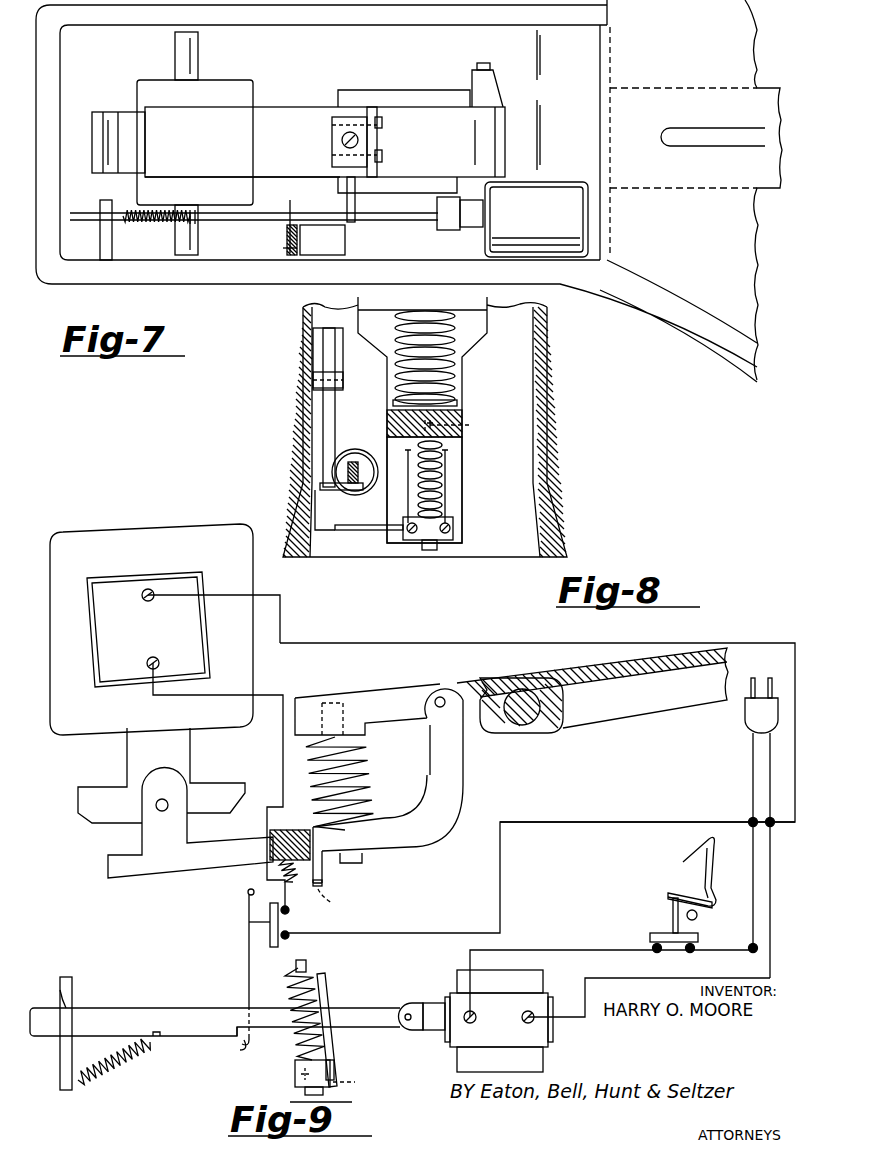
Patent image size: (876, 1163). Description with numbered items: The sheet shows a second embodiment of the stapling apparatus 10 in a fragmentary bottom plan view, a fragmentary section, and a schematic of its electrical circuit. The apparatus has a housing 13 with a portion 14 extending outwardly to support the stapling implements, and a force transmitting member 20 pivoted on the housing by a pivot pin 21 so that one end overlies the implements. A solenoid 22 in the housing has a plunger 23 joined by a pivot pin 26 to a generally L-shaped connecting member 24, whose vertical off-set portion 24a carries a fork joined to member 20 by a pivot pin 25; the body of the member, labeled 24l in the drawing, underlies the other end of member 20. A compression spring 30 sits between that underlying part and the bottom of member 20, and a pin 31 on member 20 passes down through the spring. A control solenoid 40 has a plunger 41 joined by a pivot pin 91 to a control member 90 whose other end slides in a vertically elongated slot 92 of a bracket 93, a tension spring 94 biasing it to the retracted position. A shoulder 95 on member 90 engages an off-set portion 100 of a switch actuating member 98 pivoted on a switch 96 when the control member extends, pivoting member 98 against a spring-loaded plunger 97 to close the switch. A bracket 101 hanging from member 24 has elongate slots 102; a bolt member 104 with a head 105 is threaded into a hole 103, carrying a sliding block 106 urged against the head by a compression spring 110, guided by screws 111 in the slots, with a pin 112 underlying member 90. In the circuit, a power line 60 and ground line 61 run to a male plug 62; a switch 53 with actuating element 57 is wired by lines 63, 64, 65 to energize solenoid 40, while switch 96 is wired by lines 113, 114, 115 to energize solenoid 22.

In FIG. 7, the apparatus 10 is at (190, 283).
In FIG. 7, the housing 13 is at (270, 262).
In FIG. 8, the housing 13 is at (545, 420).
In FIG. 7, the portion 14 is at (722, 249).
In FIG. 7, the force transmitting member 20 is at (757, 198).
In FIG. 9, the force transmitting member 20 is at (683, 716).
In FIG. 9, the pivot pin 21 is at (540, 733).
In FIG. 7, the solenoid 22 is at (160, 82).
In FIG. 9, the solenoid 22 is at (100, 545).
In FIG. 7, the plunger 23 is at (122, 112).
In FIG. 9, the plunger 23 is at (127, 765).
In FIG. 7, the connecting member 24 is at (288, 100).
In FIG. 8, the connecting member 24 is at (470, 420).
In FIG. 9, the connecting member 24 is at (470, 797).
In FIG. 7, the off-set portion 24a is at (470, 80).
In FIG. 9, the off-set portion 24a is at (465, 770).
In FIG. 7, the armature lever arm 24l is at (265, 105).
In FIG. 9, the armature lever arm 24l is at (182, 870).
In FIG. 7, the pivot pin 25 is at (482, 63).
In FIG. 9, the pivot pin 25 is at (442, 697).
In FIG. 9, the pivot pin 26 is at (156, 808).
In FIG. 8, the compression spring 30 is at (457, 386).
In FIG. 9, the compression spring 30 is at (366, 778).
In FIG. 8, the pin 31 is at (455, 352).
In FIG. 9, the pin 31 is at (355, 863).
In FIG. 7, the control solenoid 40 is at (550, 212).
In FIG. 8, the control solenoid 40 is at (372, 450).
In FIG. 9, the control solenoid 40 is at (511, 1027).
In FIG. 7, the plunger 41 is at (475, 228).
In FIG. 9, the plunger 41 is at (432, 1003).
In FIG. 9, the switch 53 is at (655, 933).
In FIG. 9, the actuating element 57 is at (706, 872).
In FIG. 9, the power line 60 is at (753, 782).
In FIG. 9, the ground line 61 is at (786, 766).
In FIG. 9, the male plug 62 is at (755, 725).
In FIG. 9, the line 63 is at (748, 950).
In FIG. 9, the line 64 is at (594, 950).
In FIG. 9, the line 65 is at (648, 978).
In FIG. 7, the control member 90 is at (235, 210).
In FIG. 8, the control member 90 is at (348, 465).
In FIG. 9, the control member 90 is at (178, 1006).
In FIG. 7, the pivot pin 91 is at (445, 232).
In FIG. 9, the pivot pin 91 is at (408, 1030).
In FIG. 9, the slot 92 is at (52, 1000).
In FIG. 7, the bracket 93 is at (100, 236).
In FIG. 9, the bracket 93 is at (60, 1054).
In FIG. 7, the tension spring 94 is at (152, 210).
In FIG. 9, the tension spring 94 is at (128, 1056).
In FIG. 7, the shoulder 95 is at (280, 222).
In FIG. 9, the shoulder 95 is at (240, 1038).
In FIG. 7, the switch 96 is at (336, 249).
In FIG. 8, the switch 96 is at (313, 345).
In FIG. 9, the switch 96 is at (289, 912).
In FIG. 7, the spring-loaded plunger 97 is at (283, 250).
In FIG. 8, the spring-loaded plunger 97 is at (313, 378).
In FIG. 9, the spring-loaded plunger 97 is at (262, 928).
In FIG. 8, the switch actuating member 98 is at (323, 412).
In FIG. 9, the switch actuating member 98 is at (249, 972).
In FIG. 7, the off-set portion 100 is at (294, 190).
In FIG. 8, the off-set portion 100 is at (364, 497).
In FIG. 9, the off-set portion 100 is at (262, 1042).
In FIG. 7, the bracket 101 is at (377, 120).
In FIG. 8, the bracket 101 is at (462, 450).
In FIG. 9, the bracket 101 is at (322, 882).
In FIG. 7, the elongate slots 102 is at (380, 137).
In FIG. 8, the elongate slots 102 is at (445, 496).
In FIG. 9, the elongate slots 102 is at (352, 990).
In FIG. 8, the internally threaded hole 103 is at (466, 425).
In FIG. 9, the internally threaded hole 103 is at (305, 840).
In FIG. 8, the bolt member 104 is at (442, 466).
In FIG. 9, the bolt member 104 is at (306, 964).
In FIG. 7, the head 105 is at (332, 142).
In FIG. 8, the head 105 is at (428, 540).
In FIG. 9, the head 105 is at (330, 1096).
In FIG. 7, the sliding block 106 is at (338, 148).
In FIG. 8, the sliding block 106 is at (437, 548).
In FIG. 9, the sliding block 106 is at (305, 1092).
In FIG. 9, the compression spring 110 is at (272, 853).
In FIG. 7, the screws 111 is at (330, 124).
In FIG. 8, the screws 111 is at (450, 528).
In FIG. 9, the screws 111 is at (370, 1050).
In FIG. 7, the pin 112 is at (351, 222).
In FIG. 8, the pin 112 is at (372, 530).
In FIG. 9, the pin 112 is at (295, 1073).
In FIG. 9, the line 113 is at (578, 822).
In FIG. 9, the line 114 is at (283, 750).
In FIG. 9, the line 115 is at (385, 643).